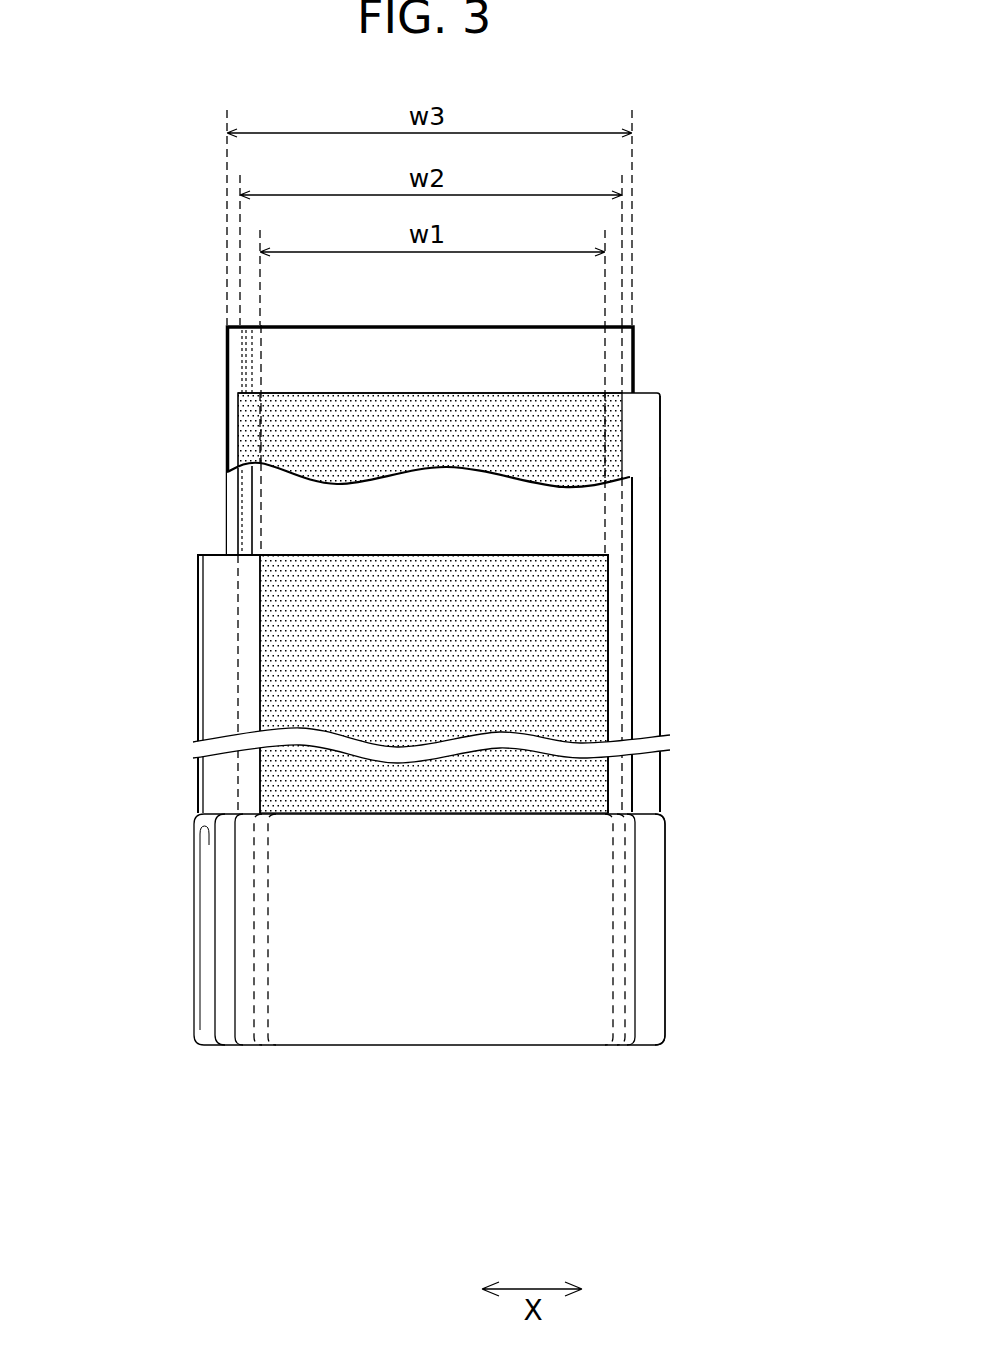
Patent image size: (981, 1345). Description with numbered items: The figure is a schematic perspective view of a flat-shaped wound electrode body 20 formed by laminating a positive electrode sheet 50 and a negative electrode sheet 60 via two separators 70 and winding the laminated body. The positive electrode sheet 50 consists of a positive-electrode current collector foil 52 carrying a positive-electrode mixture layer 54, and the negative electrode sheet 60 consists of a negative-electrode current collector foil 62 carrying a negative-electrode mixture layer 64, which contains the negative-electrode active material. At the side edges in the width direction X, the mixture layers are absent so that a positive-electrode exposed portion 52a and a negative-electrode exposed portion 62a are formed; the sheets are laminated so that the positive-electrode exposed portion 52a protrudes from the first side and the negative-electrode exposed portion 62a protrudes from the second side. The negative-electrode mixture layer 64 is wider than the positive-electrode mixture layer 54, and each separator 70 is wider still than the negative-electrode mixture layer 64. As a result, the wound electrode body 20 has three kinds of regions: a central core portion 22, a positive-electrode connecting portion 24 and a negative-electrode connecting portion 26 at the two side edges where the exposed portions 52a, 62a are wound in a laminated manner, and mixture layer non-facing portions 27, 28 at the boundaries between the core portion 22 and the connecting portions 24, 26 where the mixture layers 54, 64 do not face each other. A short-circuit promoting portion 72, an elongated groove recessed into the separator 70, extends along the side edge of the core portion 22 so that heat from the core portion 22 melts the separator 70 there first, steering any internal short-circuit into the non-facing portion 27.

The wound electrode body 20 is at (770, 142).
The core portion 22 is at (447, 1018).
The positive-electrode connecting portion 24 is at (222, 1018).
The negative-electrode connecting portion 26 is at (650, 1018).
The mixture layer non-facing portion 27 is at (255, 1047).
The mixture layer non-facing portion 28 is at (613, 1047).
The positive electrode sheet 50 is at (324, 684).
The positive-electrode current collector foil 52 is at (150, 684).
The positive-electrode exposed portion 52a is at (212, 680).
The positive-electrode mixture layer 54 is at (263, 573).
The negative electrode sheet 60 is at (521, 601).
The negative-electrode current collector foil 62 is at (660, 613).
The negative-electrode exposed portion 62a is at (647, 548).
The negative-electrode mixture layer 64 is at (588, 435).
The separator 70 is at (573, 359).
The short-circuit promoting portion 72 is at (233, 358).